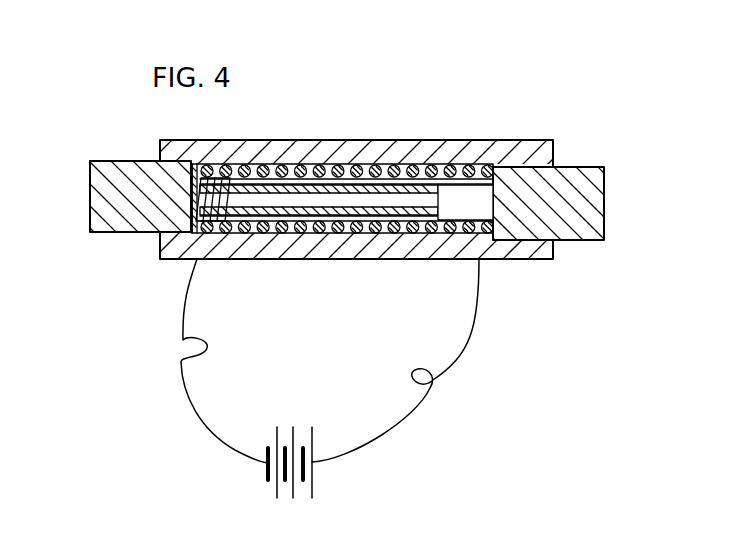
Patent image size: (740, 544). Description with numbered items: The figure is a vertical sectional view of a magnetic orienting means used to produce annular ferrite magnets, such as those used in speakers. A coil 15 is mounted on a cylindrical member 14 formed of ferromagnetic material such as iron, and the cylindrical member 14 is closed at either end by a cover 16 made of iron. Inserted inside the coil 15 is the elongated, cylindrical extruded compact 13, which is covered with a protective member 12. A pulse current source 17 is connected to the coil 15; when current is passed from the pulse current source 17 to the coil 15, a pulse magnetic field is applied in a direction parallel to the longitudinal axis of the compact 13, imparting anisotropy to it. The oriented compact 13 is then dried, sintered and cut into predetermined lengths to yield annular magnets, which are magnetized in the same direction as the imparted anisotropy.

The protective member 12 is at (368, 166).
The compact 13 is at (307, 200).
The cylindrical member 14 is at (452, 150).
The coil 15 is at (488, 166).
The cover 16 is at (132, 227).
The pulse current source 17 is at (288, 426).